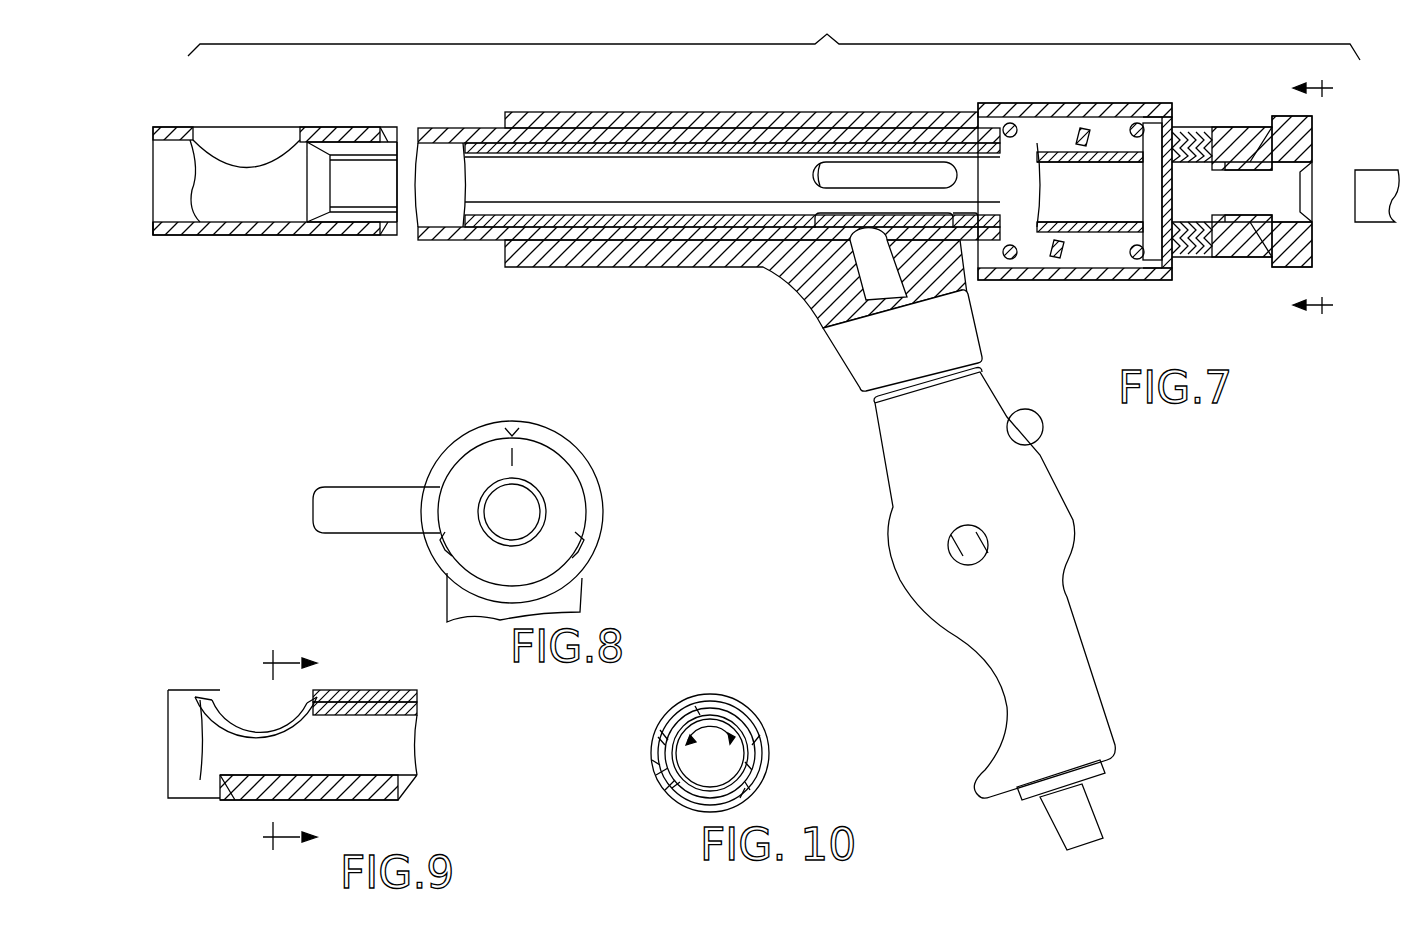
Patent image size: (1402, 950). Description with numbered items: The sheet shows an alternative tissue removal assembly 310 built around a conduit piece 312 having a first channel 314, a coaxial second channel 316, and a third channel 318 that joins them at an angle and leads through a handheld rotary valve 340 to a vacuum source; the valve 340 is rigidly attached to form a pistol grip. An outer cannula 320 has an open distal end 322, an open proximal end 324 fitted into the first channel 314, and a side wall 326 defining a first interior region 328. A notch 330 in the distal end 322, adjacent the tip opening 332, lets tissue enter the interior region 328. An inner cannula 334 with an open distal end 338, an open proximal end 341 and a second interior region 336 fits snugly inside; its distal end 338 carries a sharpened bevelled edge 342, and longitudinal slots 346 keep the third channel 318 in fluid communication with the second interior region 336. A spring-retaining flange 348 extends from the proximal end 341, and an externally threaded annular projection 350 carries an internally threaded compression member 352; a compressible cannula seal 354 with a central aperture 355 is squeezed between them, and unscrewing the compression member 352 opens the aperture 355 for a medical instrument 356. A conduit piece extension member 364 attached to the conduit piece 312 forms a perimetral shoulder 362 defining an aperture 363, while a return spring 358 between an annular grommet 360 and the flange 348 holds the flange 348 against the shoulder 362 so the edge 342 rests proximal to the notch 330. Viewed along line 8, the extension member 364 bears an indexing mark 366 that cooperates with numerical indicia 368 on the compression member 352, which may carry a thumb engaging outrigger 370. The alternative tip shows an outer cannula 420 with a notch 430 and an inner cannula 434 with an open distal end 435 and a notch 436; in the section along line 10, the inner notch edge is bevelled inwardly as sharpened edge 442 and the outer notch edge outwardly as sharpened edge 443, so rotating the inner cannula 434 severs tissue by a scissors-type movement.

In FIG. 7, the tissue removal assembly 310 is at (710, 98).
In FIG. 7, the conduit piece 312 is at (815, 112).
In FIG. 7, the first channel 314 is at (640, 230).
In FIG. 7, the second channel 316 is at (975, 270).
In FIG. 7, the third channel 318 is at (875, 296).
In FIG. 7, the outer cannula 320 is at (458, 128).
In FIG. 7, the distal end 322 is at (165, 127).
In FIG. 7, the proximal end 324 is at (590, 140).
In FIG. 7, the side wall 326 is at (355, 130).
In FIG. 7, the first interior region 328 is at (303, 190).
In FIG. 7, the notch 330 is at (247, 165).
In FIG. 7, the tip opening 332 is at (150, 217).
In FIG. 7, the inner cannula 334 is at (604, 240).
In FIG. 7, the second interior region 336 is at (508, 196).
In FIG. 7, the distal end 338 is at (352, 235).
In FIG. 7, the handheld rotary valve 340 is at (1007, 386).
In FIG. 7, the proximal end 341 is at (1124, 262).
In FIG. 7, the sharpened bevelled edge 342 is at (317, 173).
In FIG. 7, the longitudinal slots 346 is at (855, 213).
In FIG. 7, the spring-retaining flange 348 is at (1153, 260).
In FIG. 7, the externally threaded annular projection 350 is at (1200, 250).
In FIG. 7, the compression member 352 is at (1285, 264).
In FIG. 8, the compression member 352 is at (458, 572).
In FIG. 7, the compressible cannula seal 354 is at (1244, 147).
In FIG. 7, the central aperture 355 is at (1245, 226).
In FIG. 7, the medical instrument 356 is at (1372, 198).
In FIG. 7, the return spring 358 is at (1047, 260).
In FIG. 7, the annular grommet 360 is at (1018, 124).
In FIG. 7, the perimetral shoulder 362 is at (1130, 168).
In FIG. 7, the aperture 363 is at (1090, 187).
In FIG. 7, the conduit piece extension member 364 is at (1110, 103).
In FIG. 7, the indexing mark 366 is at (1170, 115).
In FIG. 8, the indexing mark 366 is at (518, 425).
In FIG. 8, the numerical indicia 368 is at (530, 460).
In FIG. 8, the thumb engaging outrigger 370 is at (363, 500).
In FIG. 7, the section line 8- 8 is at (1325, 197).
In FIG. 9, the section line 10- 10 is at (289, 754).
In FIG. 9, the outer cannula 420 is at (383, 797).
In FIG. 10, the outer cannula 420 is at (655, 775).
In FIG. 9, the notch 430 is at (320, 688).
In FIG. 10, the notch 430 is at (718, 698).
In FIG. 9, the inner cannula 434 is at (412, 708).
In FIG. 10, the inner cannula 434 is at (762, 765).
In FIG. 9, the open distal end 435 is at (205, 690).
In FIG. 9, the notch 436 is at (248, 728).
In FIG. 10, the notch 436 is at (675, 728).
In FIG. 10, the sharpened edge 442 is at (758, 730).
In FIG. 10, the sharpened edge 443 is at (658, 737).